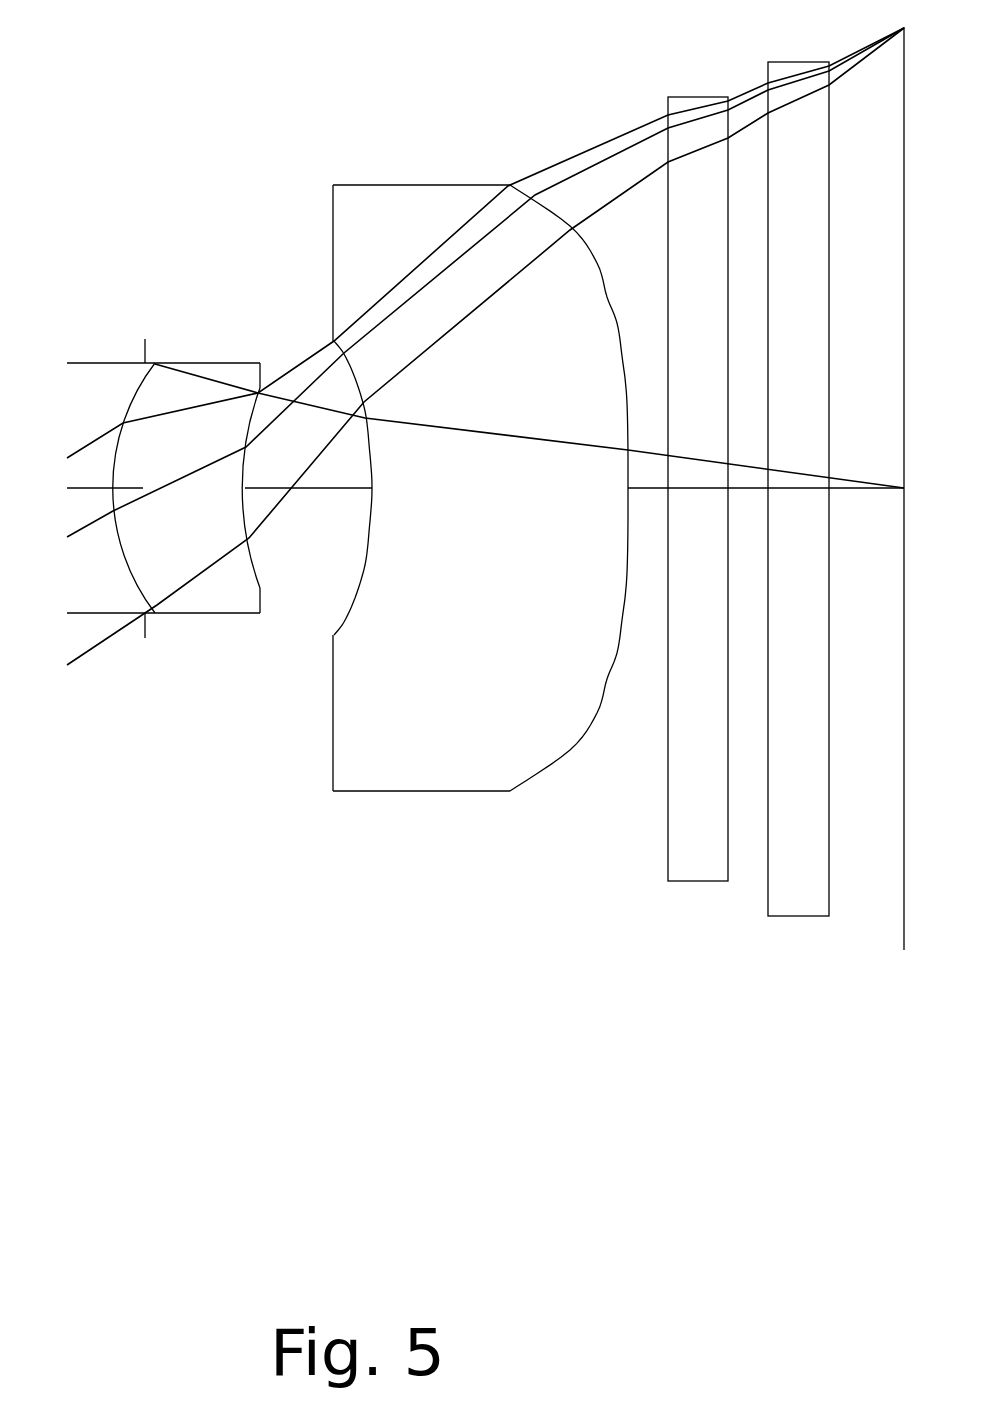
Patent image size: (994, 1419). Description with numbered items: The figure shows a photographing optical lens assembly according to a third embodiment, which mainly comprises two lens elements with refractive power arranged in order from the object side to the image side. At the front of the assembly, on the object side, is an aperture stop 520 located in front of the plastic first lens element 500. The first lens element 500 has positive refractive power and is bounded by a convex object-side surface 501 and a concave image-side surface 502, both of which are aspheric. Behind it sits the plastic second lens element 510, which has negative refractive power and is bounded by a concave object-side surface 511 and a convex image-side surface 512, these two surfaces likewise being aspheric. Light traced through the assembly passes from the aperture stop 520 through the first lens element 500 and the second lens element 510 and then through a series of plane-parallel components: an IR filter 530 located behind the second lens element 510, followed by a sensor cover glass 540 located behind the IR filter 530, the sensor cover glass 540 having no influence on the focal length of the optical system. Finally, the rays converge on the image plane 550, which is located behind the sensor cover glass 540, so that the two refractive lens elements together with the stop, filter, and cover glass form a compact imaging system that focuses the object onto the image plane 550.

The first lens element 500 is at (178, 502).
The object-side surface of first lens element 501 is at (129, 571).
The image-side surface of first lens element 502 is at (257, 548).
The second lens element 510 is at (410, 545).
The object-side surface of second lens element 511 is at (368, 464).
The image-side surface of second lens element 512 is at (568, 752).
The aperture stop 520 is at (143, 348).
The IR filter 530 is at (693, 835).
The sensor cover glass 540 is at (794, 869).
The image plane 550 is at (905, 883).